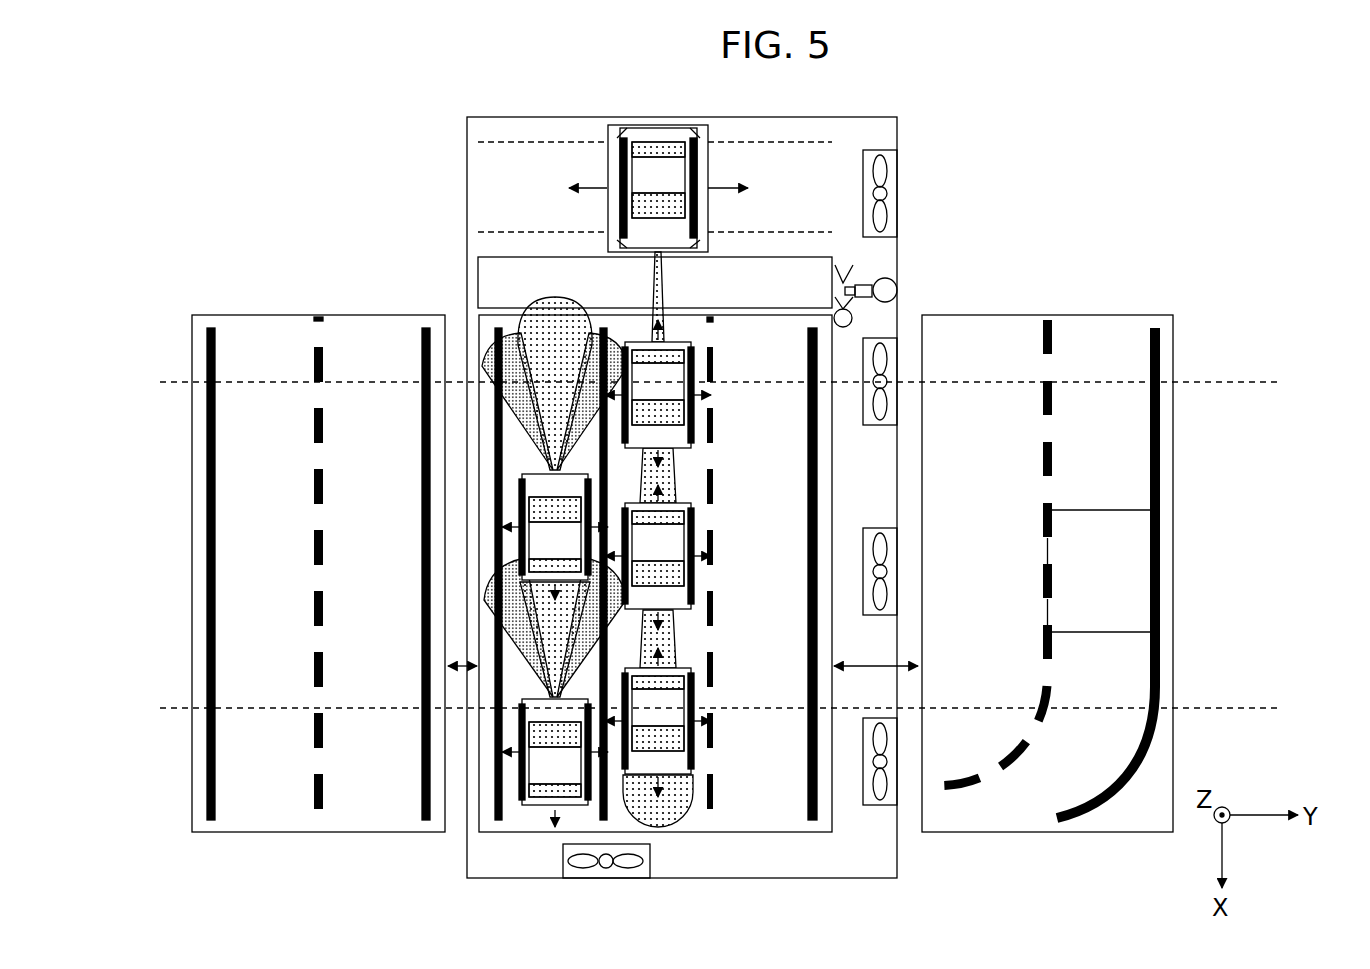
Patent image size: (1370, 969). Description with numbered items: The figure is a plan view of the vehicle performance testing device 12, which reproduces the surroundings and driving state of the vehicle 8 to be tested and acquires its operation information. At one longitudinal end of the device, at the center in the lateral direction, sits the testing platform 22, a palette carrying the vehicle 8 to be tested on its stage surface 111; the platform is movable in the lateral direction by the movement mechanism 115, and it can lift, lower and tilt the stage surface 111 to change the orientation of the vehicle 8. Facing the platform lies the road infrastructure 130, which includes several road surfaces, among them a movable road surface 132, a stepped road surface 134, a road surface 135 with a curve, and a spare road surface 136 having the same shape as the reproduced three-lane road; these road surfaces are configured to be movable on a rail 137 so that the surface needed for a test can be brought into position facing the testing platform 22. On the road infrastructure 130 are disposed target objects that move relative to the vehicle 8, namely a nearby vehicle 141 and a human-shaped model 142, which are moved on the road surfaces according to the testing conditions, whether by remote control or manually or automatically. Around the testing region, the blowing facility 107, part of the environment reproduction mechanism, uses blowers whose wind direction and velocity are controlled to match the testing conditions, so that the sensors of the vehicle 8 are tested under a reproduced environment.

The vehicle to be tested 8 is at (660, 133).
The vehicle performance testing device 12 is at (462, 886).
The testing platform 22 is at (593, 153).
The blowing facility 107 is at (882, 803).
The stage surface 111 is at (639, 159).
The movement mechanism 115 is at (468, 142).
The road infrastructure 130 is at (686, 542).
The movable road surface 132 is at (478, 270).
The stepped road surface 134 is at (1120, 507).
The road surface 135 is at (1083, 543).
The spare road surface 136 is at (268, 315).
The rail 137 is at (1277, 382).
The nearby vehicle 141 is at (697, 358).
The human-shaped model 142 is at (867, 275).